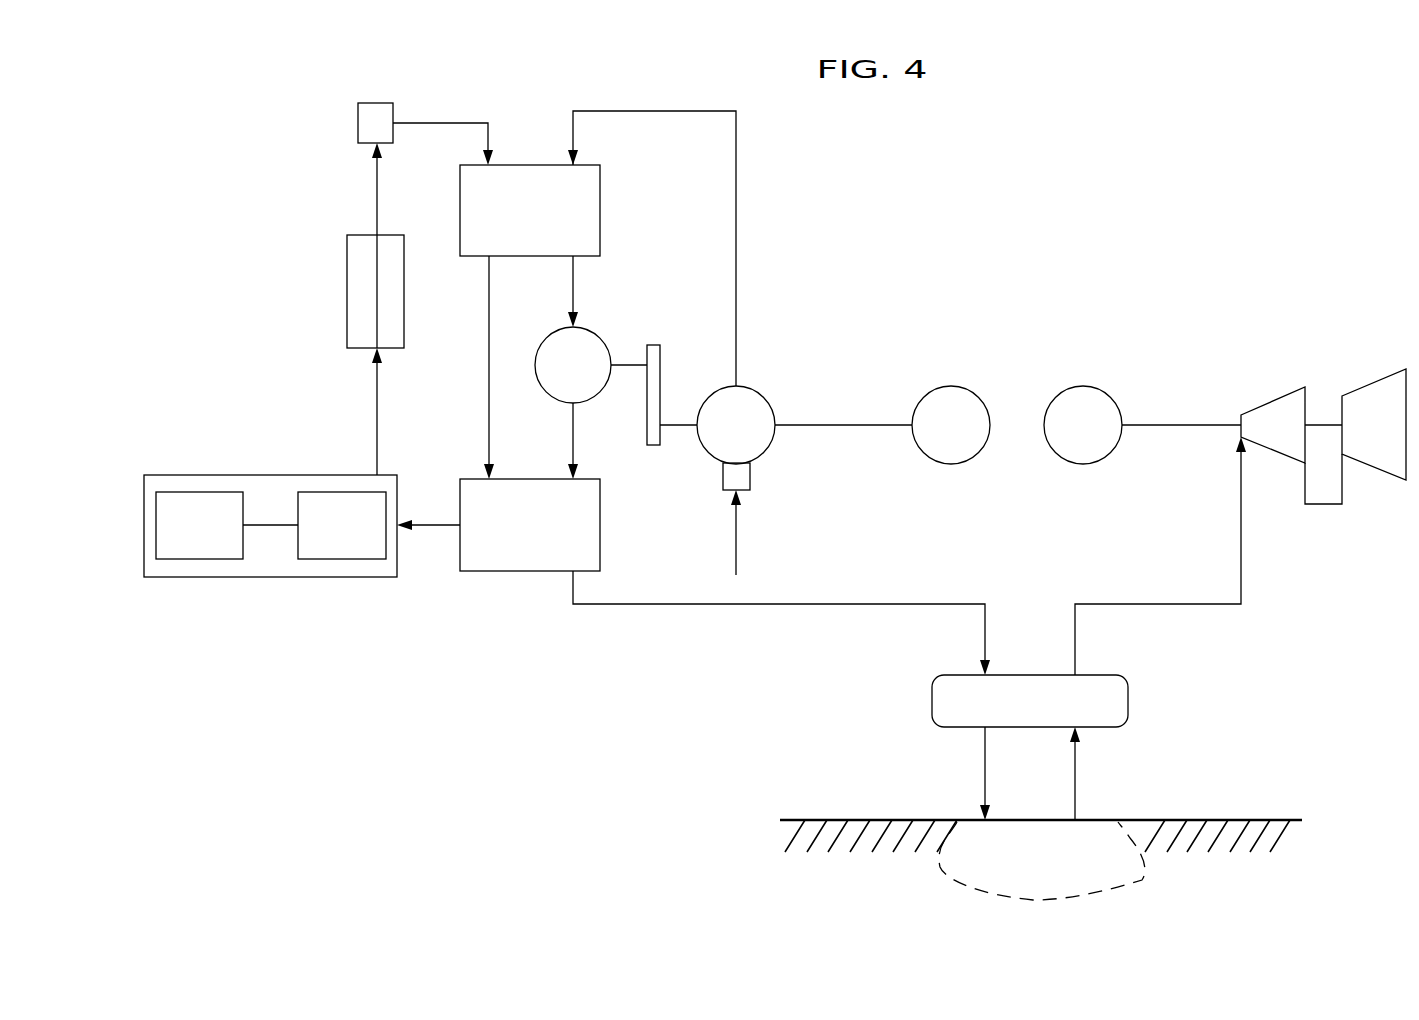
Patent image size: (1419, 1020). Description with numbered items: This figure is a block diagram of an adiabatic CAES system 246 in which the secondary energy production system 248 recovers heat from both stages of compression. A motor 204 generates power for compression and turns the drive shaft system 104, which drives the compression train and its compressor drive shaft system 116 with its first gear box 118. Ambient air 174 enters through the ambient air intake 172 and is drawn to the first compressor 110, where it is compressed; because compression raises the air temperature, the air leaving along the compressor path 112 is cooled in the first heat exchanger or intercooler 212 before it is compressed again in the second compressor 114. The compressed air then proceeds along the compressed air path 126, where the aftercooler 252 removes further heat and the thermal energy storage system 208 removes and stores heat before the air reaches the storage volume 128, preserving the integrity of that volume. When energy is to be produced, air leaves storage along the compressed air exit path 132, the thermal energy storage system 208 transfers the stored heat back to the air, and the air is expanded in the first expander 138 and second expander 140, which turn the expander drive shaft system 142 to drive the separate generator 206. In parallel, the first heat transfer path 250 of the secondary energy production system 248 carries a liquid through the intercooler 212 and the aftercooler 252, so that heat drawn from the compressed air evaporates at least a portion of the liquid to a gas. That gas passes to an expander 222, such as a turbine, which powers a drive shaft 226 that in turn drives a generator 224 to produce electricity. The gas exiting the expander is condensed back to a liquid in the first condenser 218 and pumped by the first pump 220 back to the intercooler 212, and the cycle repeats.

The drive shaft system 104 is at (855, 423).
The first compressor 110 is at (716, 439).
The compressor path 112 is at (736, 190).
The second compressor 114 is at (553, 379).
The compressor drive shaft system 116 is at (691, 345).
The first gear box 118 is at (663, 437).
The compressed air path 126 is at (575, 423).
The storage volume 128 is at (1035, 887).
The compressed air exit path 132 is at (1187, 604).
The first expander 138 is at (1253, 439).
The second expander 140 is at (1354, 439).
The expander drive shaft system 142 is at (1168, 422).
The ambient air intake 172 is at (755, 478).
The ambient air 174 is at (783, 552).
The motor 204 is at (931, 439).
The generator 206 is at (1063, 439).
The thermal energy storage system 208 is at (1010, 715).
The first heat exchanger 212 is at (510, 225).
The first condenser 218 is at (356, 306).
The first pump 220 is at (358, 130).
The expander 222 is at (322, 539).
The generator 224 is at (180, 539).
The drive shaft 226 is at (268, 525).
The adiabatic CAES system 246 is at (1093, 170).
The secondary energy production system 248 is at (421, 71).
The first heat transfer path 250 is at (463, 120).
The aftercooler 252 is at (510, 539).